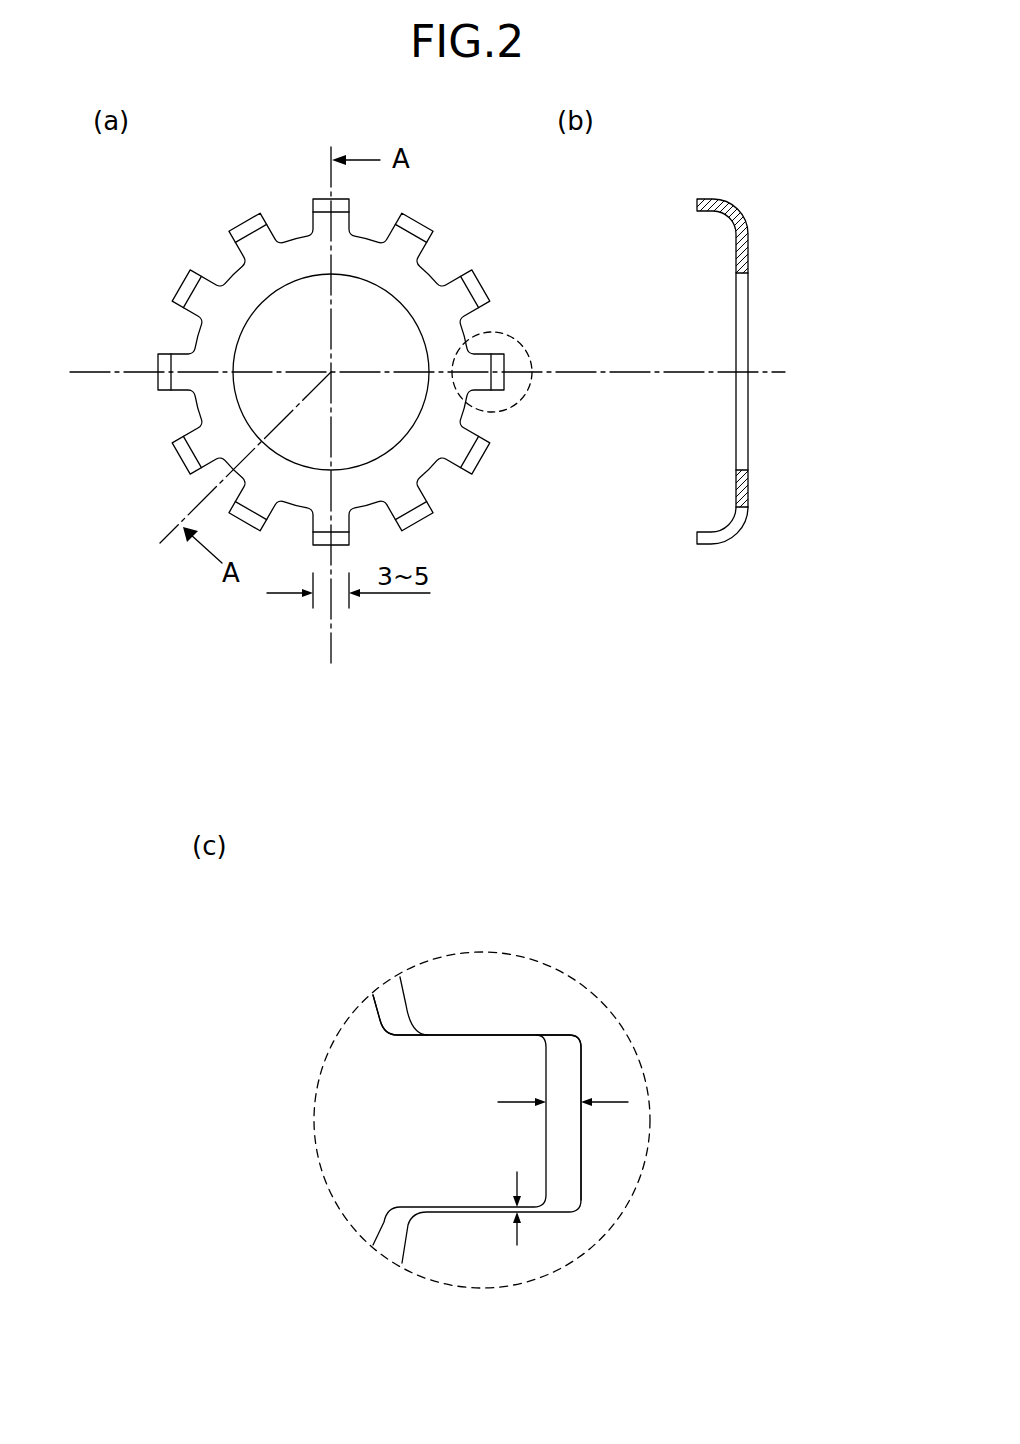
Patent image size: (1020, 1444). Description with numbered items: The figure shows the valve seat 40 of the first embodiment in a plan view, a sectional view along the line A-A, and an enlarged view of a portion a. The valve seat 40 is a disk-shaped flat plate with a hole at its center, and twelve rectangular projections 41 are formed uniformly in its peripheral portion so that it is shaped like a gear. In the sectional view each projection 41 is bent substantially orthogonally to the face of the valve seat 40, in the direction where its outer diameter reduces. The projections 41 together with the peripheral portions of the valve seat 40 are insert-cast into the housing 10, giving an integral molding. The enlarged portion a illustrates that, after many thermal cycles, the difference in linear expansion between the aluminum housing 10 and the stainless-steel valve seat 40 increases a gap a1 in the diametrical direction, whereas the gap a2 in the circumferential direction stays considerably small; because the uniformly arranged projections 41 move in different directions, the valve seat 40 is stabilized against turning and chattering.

The valve seat 40 is at (428, 273).
The projection 41 is at (485, 282).
The housing 10 is at (550, 1012).
The portion a is at (523, 347).
The gap in the diametrical direction a1 is at (562, 1100).
The gap in the circumferential direction a2 is at (525, 1210).